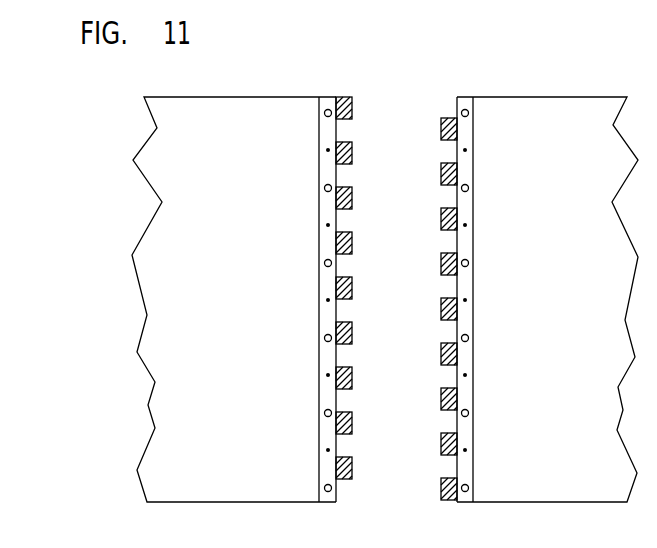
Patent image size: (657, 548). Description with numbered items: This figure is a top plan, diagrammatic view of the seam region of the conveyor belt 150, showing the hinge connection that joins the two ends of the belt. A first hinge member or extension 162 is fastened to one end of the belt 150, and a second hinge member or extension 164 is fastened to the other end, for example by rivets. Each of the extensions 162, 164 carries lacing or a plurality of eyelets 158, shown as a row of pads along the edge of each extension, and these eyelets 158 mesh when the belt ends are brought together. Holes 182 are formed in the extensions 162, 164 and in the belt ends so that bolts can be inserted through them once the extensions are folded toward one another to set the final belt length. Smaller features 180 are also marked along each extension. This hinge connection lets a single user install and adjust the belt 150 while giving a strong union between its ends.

The conveyor belt 150 is at (489, 66).
The eyelets 158 is at (350, 152).
The first hinge member or extension 162 is at (332, 498).
The second hinge member or extension 164 is at (460, 502).
The vias 180 is at (328, 225).
The holes 182 is at (328, 411).